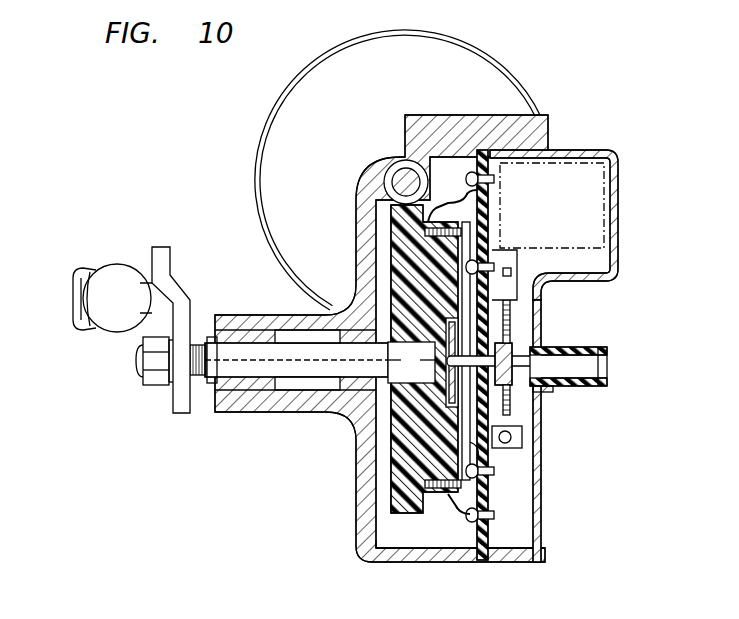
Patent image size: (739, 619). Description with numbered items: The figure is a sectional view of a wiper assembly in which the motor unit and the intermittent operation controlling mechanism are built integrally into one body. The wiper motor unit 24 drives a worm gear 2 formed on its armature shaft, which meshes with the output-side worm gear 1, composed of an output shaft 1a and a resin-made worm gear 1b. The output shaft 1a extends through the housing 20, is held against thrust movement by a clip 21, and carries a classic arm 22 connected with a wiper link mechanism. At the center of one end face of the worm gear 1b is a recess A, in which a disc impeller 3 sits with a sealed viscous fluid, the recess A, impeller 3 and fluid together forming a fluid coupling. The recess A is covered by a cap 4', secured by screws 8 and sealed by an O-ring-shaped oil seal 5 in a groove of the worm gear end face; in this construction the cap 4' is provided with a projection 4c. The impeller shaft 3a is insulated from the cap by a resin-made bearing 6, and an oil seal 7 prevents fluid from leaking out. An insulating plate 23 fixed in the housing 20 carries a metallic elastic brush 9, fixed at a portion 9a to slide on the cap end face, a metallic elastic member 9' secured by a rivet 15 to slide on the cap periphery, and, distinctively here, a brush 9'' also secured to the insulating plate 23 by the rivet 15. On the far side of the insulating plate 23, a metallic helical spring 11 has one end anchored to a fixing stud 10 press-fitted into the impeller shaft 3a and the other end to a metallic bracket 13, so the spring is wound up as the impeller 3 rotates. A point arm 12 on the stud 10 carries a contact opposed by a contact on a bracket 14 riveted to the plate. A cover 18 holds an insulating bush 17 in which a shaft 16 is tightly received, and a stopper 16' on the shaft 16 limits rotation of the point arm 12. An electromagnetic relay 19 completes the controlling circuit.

The worm gear 1 is at (366, 470).
The output shaft 1a is at (280, 395).
The resin-made worm gear 1b is at (378, 520).
The worm gear 2 is at (402, 172).
The disc impeller 3 is at (444, 331).
The impeller shaft 3a is at (545, 392).
The projection 4c is at (392, 218).
The cap 4' is at (453, 517).
The O-ring-shaped oil seal 5 is at (463, 296).
The resin-made bearing 6 is at (411, 362).
The oil seal 7 is at (490, 345).
The screws 8 is at (433, 252).
The metallic elastic brush 9 is at (434, 448).
The fixing portion of brush 9a is at (515, 318).
The metallic elastic member 9' is at (497, 524).
The brush 9'' is at (452, 196).
The fixing stud 10 is at (514, 350).
The metallic helical spring 11 is at (510, 300).
The point arm 12 is at (524, 438).
The metallic bracket 13 is at (512, 256).
The bracket 14 is at (482, 452).
The rivet 15 is at (494, 181).
The shaft 16 is at (580, 355).
The stopper 16' is at (572, 452).
The insulating bush 17 is at (588, 386).
The cover 18 is at (543, 524).
The electromagnetic relay 19 is at (600, 185).
The housing 20 is at (452, 562).
The clip 21 is at (210, 385).
The classic arm 22 is at (118, 332).
The insulating plate 23 is at (490, 208).
The wiper motor unit 24 is at (486, 74).
The recess A is at (414, 411).